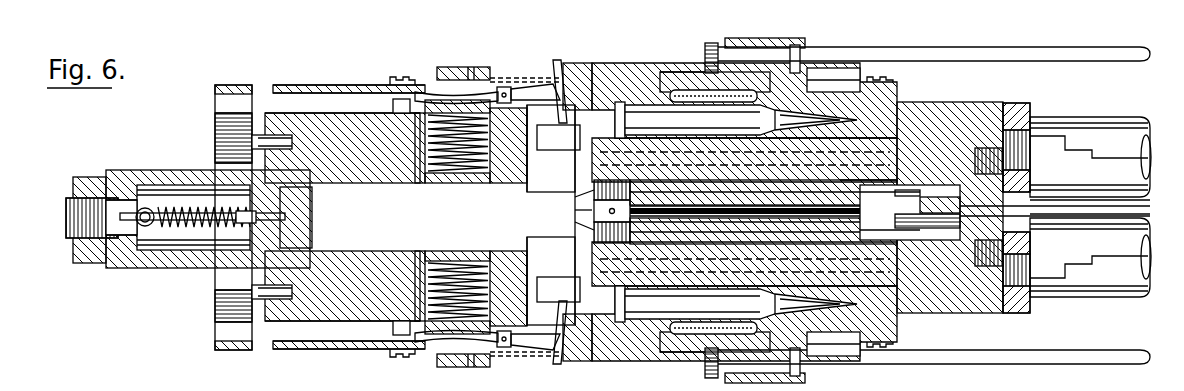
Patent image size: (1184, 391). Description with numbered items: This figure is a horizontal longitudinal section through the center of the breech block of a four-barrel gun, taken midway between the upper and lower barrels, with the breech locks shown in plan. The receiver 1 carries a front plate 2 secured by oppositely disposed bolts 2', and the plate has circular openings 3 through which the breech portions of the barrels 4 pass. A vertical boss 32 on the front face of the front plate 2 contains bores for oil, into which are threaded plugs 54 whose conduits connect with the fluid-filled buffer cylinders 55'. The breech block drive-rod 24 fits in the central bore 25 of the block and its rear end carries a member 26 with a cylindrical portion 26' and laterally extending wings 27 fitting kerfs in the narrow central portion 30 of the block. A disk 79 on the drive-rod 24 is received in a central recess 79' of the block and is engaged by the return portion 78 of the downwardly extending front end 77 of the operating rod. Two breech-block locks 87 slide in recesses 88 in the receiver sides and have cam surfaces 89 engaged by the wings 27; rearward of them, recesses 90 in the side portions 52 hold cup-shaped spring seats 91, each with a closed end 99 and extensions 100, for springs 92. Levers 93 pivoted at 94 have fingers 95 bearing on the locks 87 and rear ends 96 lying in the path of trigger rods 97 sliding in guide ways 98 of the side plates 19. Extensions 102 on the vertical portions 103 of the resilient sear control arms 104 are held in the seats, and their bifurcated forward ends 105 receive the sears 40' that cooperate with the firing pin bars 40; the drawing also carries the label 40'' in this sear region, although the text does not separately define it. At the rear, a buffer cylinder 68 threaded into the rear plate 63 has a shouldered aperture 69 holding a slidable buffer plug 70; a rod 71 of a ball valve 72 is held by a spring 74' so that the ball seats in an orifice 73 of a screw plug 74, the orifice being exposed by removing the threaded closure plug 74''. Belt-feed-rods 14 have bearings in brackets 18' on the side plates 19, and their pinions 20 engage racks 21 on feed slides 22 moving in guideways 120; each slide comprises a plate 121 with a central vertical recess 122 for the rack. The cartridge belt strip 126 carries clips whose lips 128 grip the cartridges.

The receiver 1 is at (364, 349).
The front plate 2 is at (954, 211).
The bolts 2' is at (1090, 194).
The circular openings 3 is at (1013, 103).
The barrels 4 is at (1110, 117).
The belt-feed-rods 14 is at (1060, 47).
The brackets 18' is at (770, 198).
The side plates 19 is at (608, 63).
The pinion 20 is at (712, 43).
The racks 21 is at (697, 72).
The feed slides 22 is at (660, 74).
The breech block drive-rod 24 is at (722, 206).
The central bore 25 is at (763, 209).
The member 26 is at (579, 211).
The cylindrical portion 26' is at (763, 231).
The wings 27 is at (594, 196).
The narrow central portion 30 is at (763, 212).
The vertical boss 32 is at (1094, 158).
The firing pin bar 40 is at (561, 219).
The sears 40' is at (558, 289).
The upper sear box 40'' is at (558, 137).
The side portions 52 is at (312, 113).
The plugs 54 is at (1142, 160).
The buffer cylinders 55' is at (1134, 257).
The rear plate 63 is at (250, 350).
The buffer cylinder 68 is at (168, 268).
The shouldered aperture 69 is at (332, 183).
The buffer plug 70 is at (312, 220).
The rod 71 is at (186, 207).
The ball valve 72 is at (178, 221).
The orifice 73 is at (130, 185).
The screw plug 74 is at (85, 230).
The spring 74' is at (233, 226).
The threaded closure plug 74'' is at (83, 218).
The front end 77 is at (925, 228).
The return portion 78 is at (925, 197).
The disk 79 is at (909, 176).
The central recess 79' is at (860, 188).
The breech-block locks 87 is at (528, 186).
The recesses 88 is at (508, 180).
The cam surfaces 89 is at (575, 182).
The recesses 90 is at (418, 183).
The cup-shaped spring seat 91 is at (466, 178).
The spring 92 is at (445, 172).
The levers 93 is at (521, 78).
The pivot 94 is at (504, 87).
The fingers 95 is at (557, 60).
The rear ends 96 is at (405, 77).
The trigger rods 97 is at (320, 85).
The guide ways 98 is at (338, 93).
The closed end 99 is at (393, 104).
The extensions 100 is at (438, 92).
The extensions 102 is at (455, 67).
The vertical portions 103 is at (470, 67).
The sear control arms 104 is at (535, 84).
The forward ends 105 is at (580, 63).
The guideways 120 is at (810, 74).
The plate 121 is at (810, 86).
The central vertical recess 122 is at (682, 90).
The strip 126 is at (793, 50).
The lips 128 is at (672, 116).